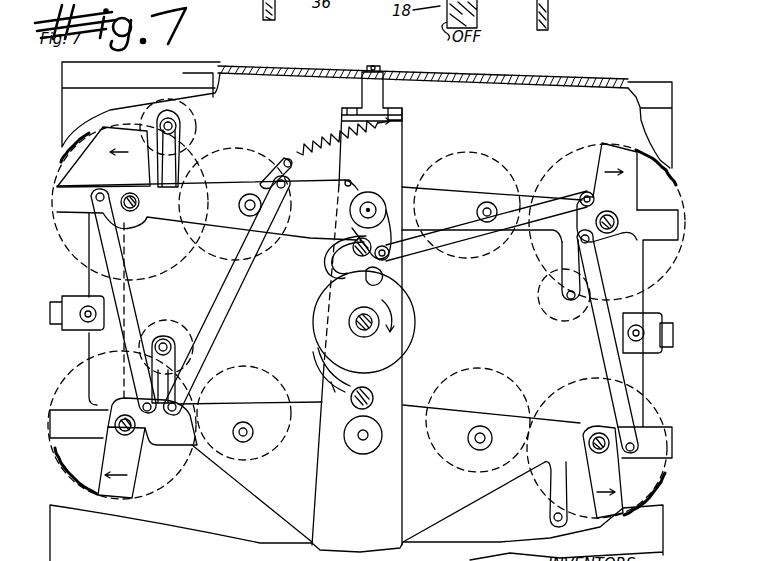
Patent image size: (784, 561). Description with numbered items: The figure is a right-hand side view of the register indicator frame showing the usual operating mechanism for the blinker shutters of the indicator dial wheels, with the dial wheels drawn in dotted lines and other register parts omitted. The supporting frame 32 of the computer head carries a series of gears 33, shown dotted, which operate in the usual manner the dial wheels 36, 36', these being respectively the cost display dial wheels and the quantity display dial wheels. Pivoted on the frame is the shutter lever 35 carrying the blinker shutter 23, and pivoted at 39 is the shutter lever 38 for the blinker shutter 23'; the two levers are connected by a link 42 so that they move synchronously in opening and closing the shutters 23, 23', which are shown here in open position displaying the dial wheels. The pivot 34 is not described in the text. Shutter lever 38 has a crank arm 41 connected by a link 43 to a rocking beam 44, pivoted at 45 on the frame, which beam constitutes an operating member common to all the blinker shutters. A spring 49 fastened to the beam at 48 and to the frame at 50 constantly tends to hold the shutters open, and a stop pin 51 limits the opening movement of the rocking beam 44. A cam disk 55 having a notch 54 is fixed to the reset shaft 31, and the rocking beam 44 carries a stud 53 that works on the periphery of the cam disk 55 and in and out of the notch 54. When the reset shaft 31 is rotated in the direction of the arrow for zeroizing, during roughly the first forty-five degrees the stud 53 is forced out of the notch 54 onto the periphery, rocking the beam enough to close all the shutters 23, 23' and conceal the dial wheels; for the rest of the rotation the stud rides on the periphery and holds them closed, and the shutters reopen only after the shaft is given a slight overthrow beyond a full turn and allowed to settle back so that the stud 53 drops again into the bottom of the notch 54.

The blinker shutter 23 is at (50, 147).
The blinker shutter 23' is at (56, 471).
The reset shaft 31 is at (357, 327).
The supporting frame 32 is at (270, 495).
The gears 33 is at (258, 260).
The pivot bar 34 is at (140, 203).
The shutter lever 35 is at (120, 165).
The dial wheel 36 is at (122, 202).
The dial wheel 36' is at (108, 425).
The shutter lever 38 is at (122, 457).
The pivot 39 is at (114, 425).
The crank arm 41 is at (161, 415).
The link 42 is at (118, 300).
The link 43 is at (230, 290).
The rocking beam 44 is at (296, 200).
The pivot 45 is at (368, 209).
The spring attachment point 48 is at (285, 155).
The spring 49 is at (318, 143).
The spring attachment point 50 is at (400, 133).
The stop pin 51 is at (349, 180).
The stud 53 is at (392, 282).
The notch 54 is at (366, 283).
The cam disk 55 is at (400, 345).